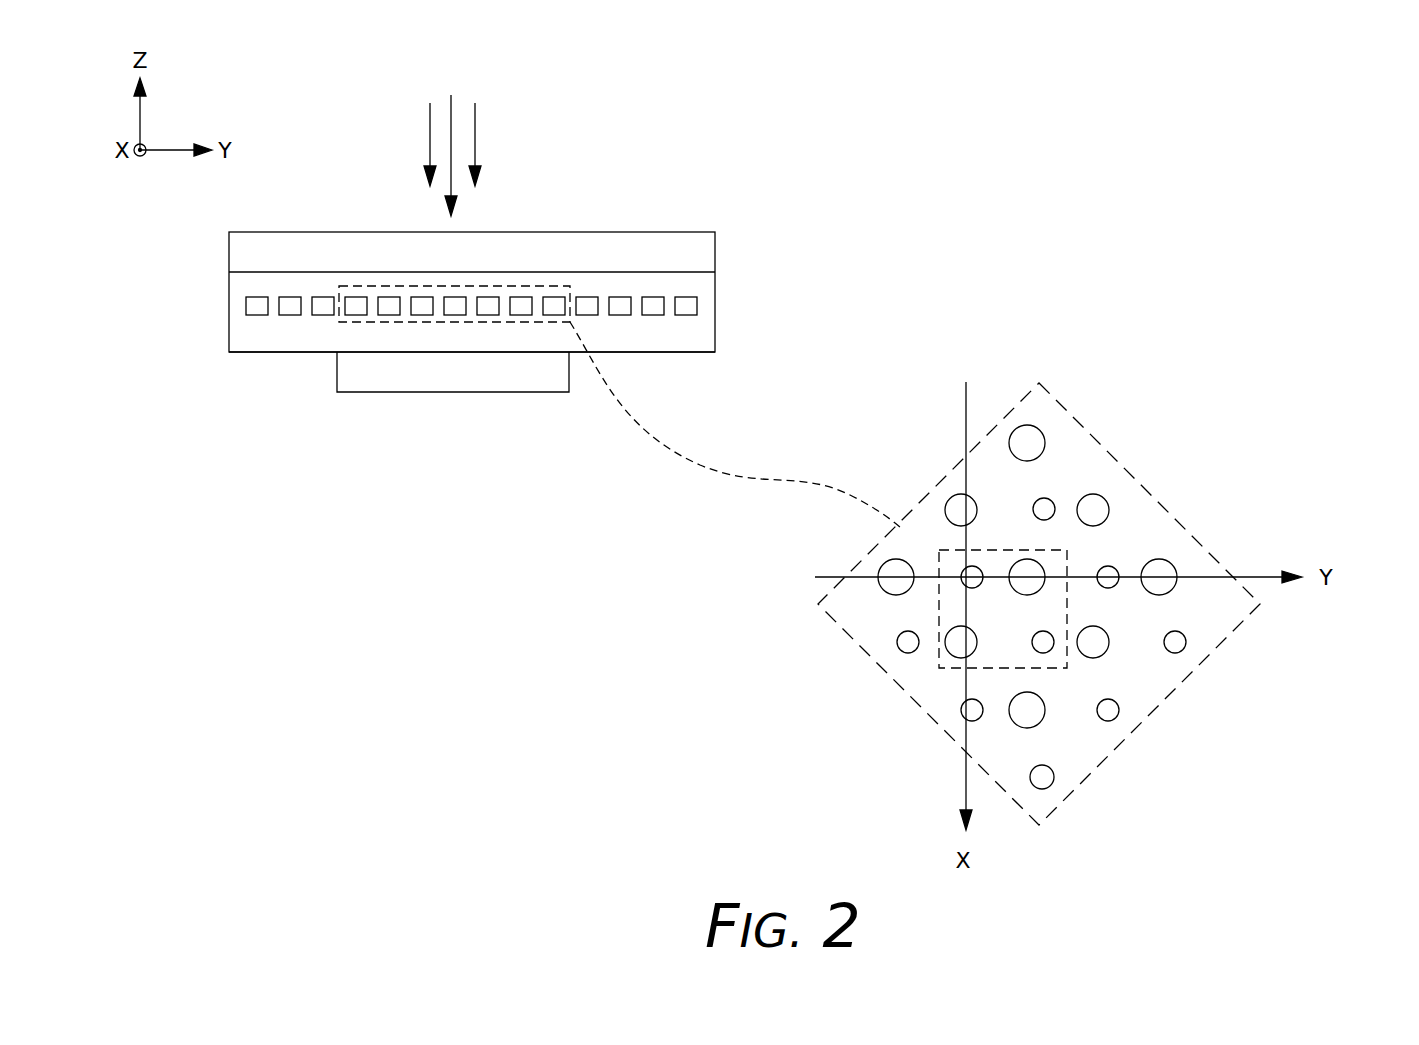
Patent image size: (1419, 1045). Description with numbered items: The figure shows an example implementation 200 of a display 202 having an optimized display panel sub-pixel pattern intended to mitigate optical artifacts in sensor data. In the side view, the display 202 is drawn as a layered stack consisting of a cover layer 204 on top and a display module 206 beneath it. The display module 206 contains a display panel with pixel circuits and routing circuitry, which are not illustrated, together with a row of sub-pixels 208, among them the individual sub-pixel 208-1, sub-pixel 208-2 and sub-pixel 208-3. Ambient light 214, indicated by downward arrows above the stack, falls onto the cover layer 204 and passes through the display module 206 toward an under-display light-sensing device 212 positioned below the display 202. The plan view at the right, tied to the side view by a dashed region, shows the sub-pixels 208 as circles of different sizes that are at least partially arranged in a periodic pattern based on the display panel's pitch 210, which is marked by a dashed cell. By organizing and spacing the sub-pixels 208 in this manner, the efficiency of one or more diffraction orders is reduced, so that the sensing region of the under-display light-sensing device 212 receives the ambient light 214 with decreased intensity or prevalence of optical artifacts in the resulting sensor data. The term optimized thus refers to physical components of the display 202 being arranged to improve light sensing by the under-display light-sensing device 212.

The example implementation 200 is at (1336, 62).
The display 202 is at (212, 232).
The cover layer 204 is at (715, 252).
The display module 206 is at (715, 312).
The sub-pixels 208 is at (296, 340).
The sub-pixel 208-1 is at (1040, 430).
The sub-pixel 208-2 is at (1053, 502).
The sub-pixel 208-3 is at (1108, 504).
The pitch 210 is at (930, 680).
The under-display light-sensing device 212 is at (358, 392).
The ambient light 214 is at (398, 120).